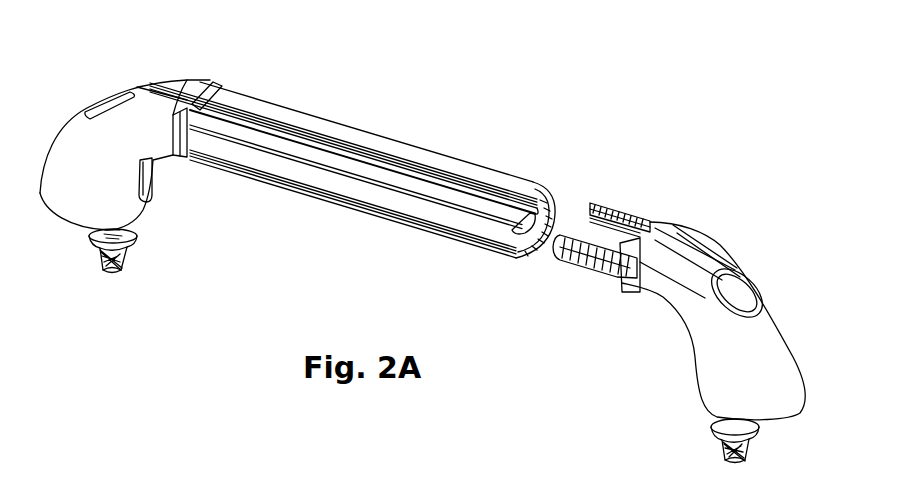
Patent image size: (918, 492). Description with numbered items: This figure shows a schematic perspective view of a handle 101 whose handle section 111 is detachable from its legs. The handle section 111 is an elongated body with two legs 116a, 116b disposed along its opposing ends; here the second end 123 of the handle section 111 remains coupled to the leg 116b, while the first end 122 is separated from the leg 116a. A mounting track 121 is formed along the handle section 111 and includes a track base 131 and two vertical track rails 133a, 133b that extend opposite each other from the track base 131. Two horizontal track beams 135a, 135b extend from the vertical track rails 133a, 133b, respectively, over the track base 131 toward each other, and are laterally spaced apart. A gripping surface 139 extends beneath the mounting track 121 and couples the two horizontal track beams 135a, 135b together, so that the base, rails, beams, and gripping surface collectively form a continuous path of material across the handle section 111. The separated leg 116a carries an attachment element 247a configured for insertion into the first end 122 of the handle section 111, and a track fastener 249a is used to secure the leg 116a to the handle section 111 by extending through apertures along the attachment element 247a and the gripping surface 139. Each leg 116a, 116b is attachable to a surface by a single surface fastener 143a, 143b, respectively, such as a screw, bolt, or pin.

The handle 101 is at (427, 63).
The handle section 111 is at (295, 203).
The leg 116a is at (762, 250).
The leg 116b is at (68, 88).
The mounting track 121 is at (367, 117).
The first end 122 is at (500, 137).
The second end 123 is at (263, 70).
The track base 131 is at (532, 213).
The vertical track rail 133a is at (306, 140).
The vertical track rail 133b is at (540, 223).
The horizontal track beam 135a is at (455, 163).
The horizontal track beam 135b is at (413, 182).
The gripping surface 139 is at (407, 205).
The surface fastener 143a is at (727, 452).
The surface fastener 143b is at (100, 265).
The attachment element 247a is at (620, 213).
The track fastener 249a is at (612, 287).